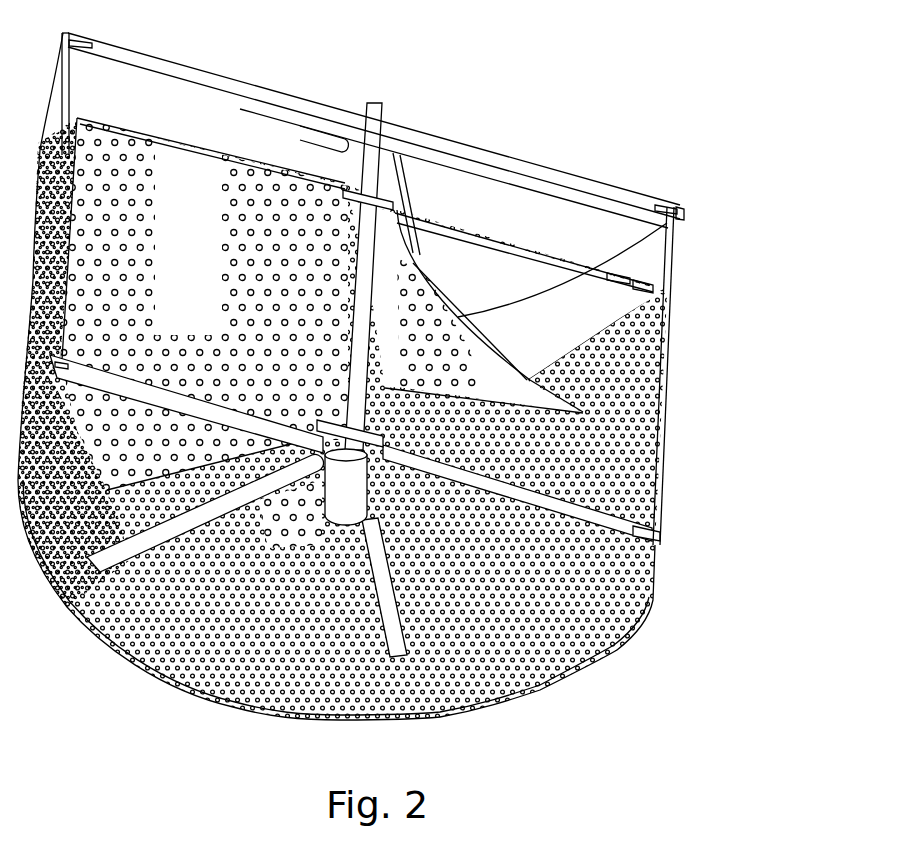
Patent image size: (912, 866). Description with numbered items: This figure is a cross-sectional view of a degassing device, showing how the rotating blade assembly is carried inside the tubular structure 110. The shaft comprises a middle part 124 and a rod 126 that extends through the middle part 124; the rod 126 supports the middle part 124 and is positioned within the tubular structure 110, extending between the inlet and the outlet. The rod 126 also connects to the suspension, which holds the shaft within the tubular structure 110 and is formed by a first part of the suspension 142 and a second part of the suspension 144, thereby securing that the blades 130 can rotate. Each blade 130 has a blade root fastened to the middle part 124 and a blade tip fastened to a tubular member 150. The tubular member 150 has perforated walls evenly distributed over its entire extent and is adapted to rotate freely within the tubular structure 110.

The tubular structure 110 is at (670, 360).
The middle part 124 is at (377, 253).
The rod 126 is at (367, 170).
The blade 130 is at (530, 375).
The first part of the suspension 142 is at (640, 205).
The second part of the suspension 144 is at (658, 507).
The tubular member 150 is at (657, 293).